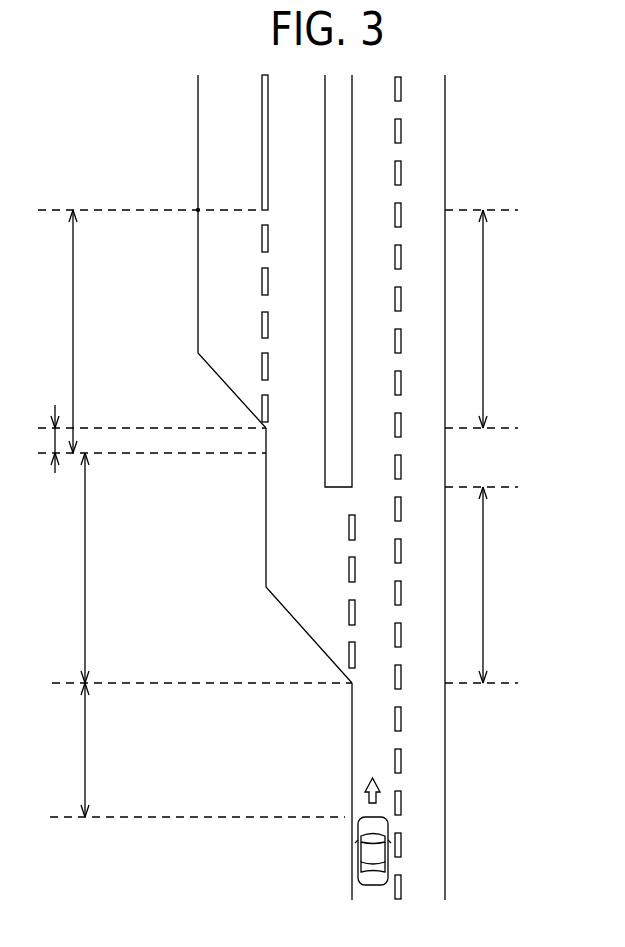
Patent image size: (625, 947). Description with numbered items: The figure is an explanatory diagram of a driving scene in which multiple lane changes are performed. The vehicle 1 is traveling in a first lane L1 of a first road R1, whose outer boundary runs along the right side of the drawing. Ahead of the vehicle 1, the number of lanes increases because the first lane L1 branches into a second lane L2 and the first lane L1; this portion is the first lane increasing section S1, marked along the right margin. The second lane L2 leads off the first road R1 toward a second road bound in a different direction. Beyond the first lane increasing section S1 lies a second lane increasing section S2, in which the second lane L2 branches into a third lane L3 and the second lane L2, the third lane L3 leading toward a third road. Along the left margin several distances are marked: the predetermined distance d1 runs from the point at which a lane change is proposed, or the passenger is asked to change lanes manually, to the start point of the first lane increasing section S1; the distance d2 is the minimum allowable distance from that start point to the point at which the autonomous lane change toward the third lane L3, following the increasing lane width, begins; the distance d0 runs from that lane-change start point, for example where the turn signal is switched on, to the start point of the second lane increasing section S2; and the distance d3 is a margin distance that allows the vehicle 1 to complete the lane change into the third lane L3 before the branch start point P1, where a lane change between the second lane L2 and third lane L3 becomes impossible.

The vehicle 1 is at (360, 850).
The first lane L1 is at (378, 737).
The second lane L2 is at (296, 465).
The third lane L3 is at (228, 310).
The branch start point P1 is at (198, 210).
The first road R1 is at (445, 795).
The distance d0 is at (34, 439).
The predetermined distance d1 is at (71, 750).
The distance d2 is at (72, 568).
The distance d3 is at (58, 331).
The first lane increasing section S1 is at (498, 585).
The second lane increasing section S2 is at (496, 319).